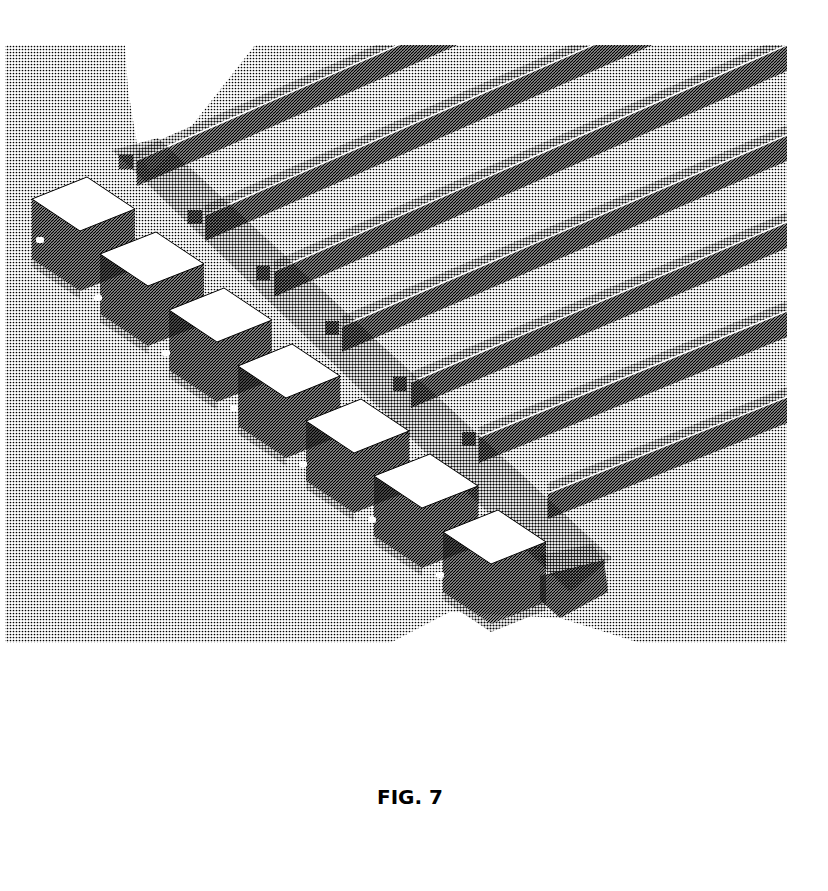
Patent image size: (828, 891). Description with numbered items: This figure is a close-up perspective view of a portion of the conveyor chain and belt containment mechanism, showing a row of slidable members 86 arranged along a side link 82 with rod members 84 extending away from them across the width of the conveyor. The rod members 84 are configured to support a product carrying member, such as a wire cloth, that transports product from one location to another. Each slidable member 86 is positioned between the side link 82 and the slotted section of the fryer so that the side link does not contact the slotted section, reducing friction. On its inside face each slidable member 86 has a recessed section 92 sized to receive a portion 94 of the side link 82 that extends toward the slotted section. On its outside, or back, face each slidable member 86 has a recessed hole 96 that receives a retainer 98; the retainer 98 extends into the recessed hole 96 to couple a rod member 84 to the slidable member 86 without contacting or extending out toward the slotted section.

The side link 82 is at (605, 590).
The rod member 84 is at (635, 478).
The slidable member 86 is at (300, 432).
The recessed section 92 is at (507, 582).
The portion of side link member 94 is at (548, 603).
The recessed hole 96 is at (368, 509).
The retainer 98 is at (362, 521).